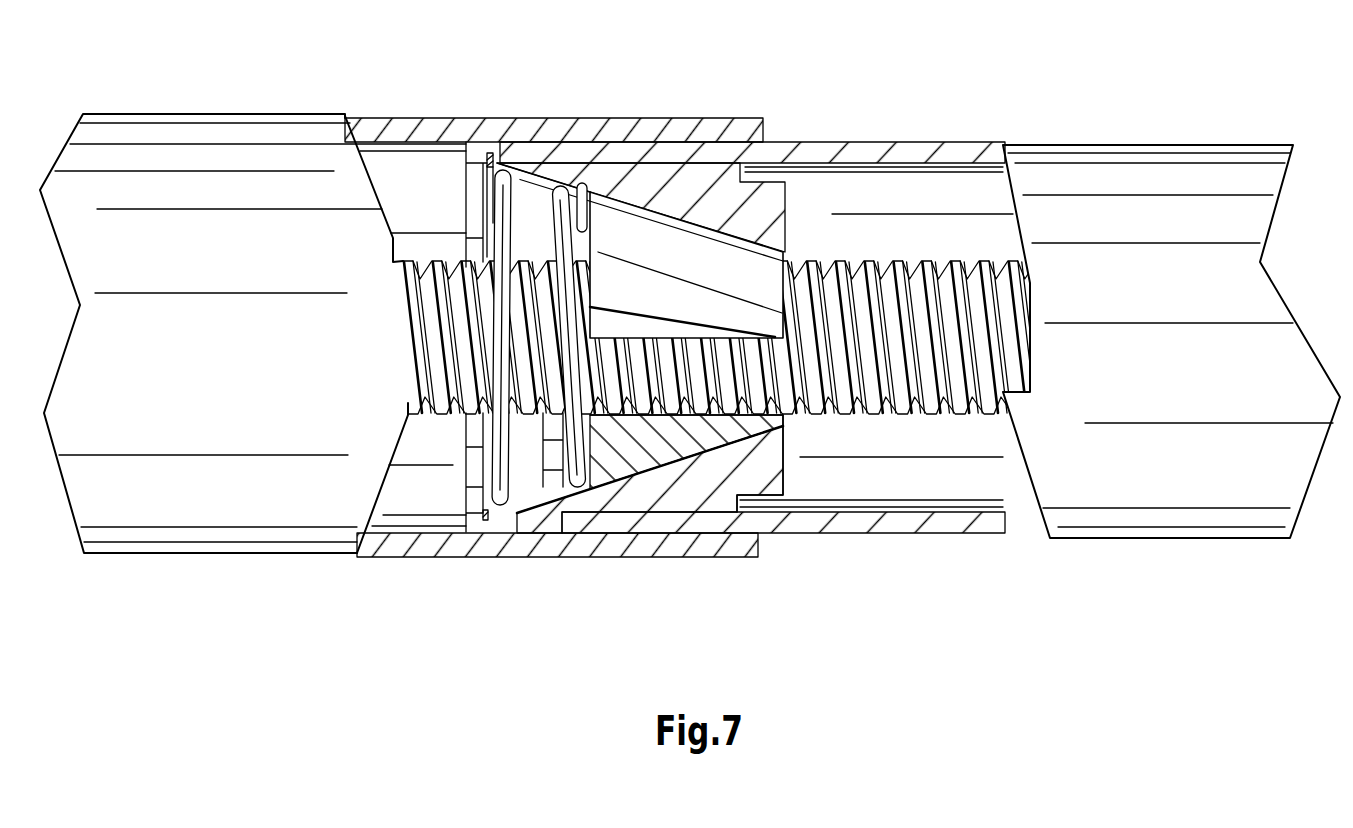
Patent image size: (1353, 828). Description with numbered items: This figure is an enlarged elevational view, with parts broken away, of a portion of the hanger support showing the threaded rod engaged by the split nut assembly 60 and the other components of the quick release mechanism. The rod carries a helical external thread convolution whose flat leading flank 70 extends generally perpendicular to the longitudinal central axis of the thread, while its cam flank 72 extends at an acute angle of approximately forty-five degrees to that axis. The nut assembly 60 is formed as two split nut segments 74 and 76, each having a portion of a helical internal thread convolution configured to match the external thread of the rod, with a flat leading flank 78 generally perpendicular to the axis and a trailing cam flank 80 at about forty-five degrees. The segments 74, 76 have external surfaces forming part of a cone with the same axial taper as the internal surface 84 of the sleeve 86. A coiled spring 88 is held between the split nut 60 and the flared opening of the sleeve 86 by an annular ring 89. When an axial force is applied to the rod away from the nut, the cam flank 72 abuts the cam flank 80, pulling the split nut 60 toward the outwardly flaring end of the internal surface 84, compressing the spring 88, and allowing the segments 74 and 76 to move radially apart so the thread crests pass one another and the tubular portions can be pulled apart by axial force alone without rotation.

The nut assembly 60 is at (609, 186).
The flat leading flank 70 is at (857, 413).
The cam flank 72 is at (893, 268).
The split nut segment 74 is at (674, 263).
The split nut segment 76 is at (640, 440).
The flat leading flank 78 is at (712, 417).
The trailing cam flank 80 is at (723, 417).
The internal surface 84 is at (705, 420).
The sleeve 86 is at (522, 526).
The coiled spring 88 is at (505, 192).
The annular ring 89 is at (487, 506).